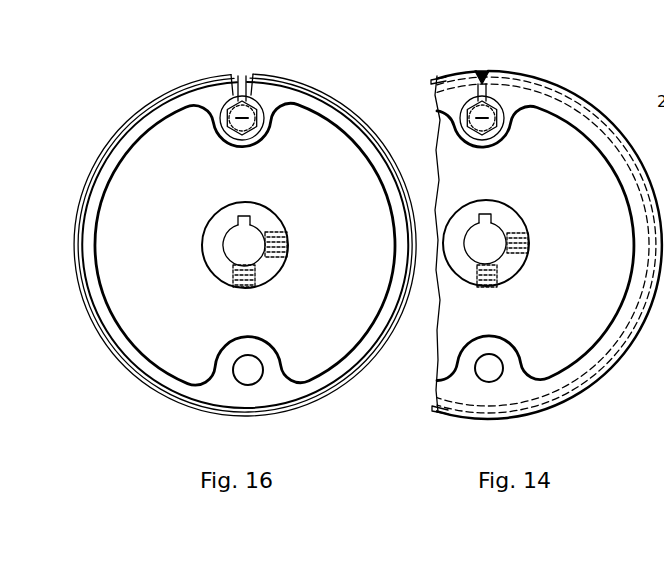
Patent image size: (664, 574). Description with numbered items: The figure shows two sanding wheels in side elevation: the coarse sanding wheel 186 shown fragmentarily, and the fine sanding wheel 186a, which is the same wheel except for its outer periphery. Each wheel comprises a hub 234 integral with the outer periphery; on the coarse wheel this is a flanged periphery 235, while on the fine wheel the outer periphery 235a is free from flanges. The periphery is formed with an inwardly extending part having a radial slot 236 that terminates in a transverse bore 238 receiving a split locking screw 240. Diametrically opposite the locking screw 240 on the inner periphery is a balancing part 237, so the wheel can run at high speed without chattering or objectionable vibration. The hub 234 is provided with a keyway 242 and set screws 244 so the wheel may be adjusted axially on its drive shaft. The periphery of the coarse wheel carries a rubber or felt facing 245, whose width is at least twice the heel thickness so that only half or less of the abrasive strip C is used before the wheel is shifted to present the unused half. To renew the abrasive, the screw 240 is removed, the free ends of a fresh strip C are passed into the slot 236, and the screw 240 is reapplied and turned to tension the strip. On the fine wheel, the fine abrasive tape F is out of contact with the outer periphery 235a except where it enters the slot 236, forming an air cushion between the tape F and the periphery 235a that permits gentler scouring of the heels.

In FIG. 14, the coarse sanding wheel 186 is at (608, 379).
In FIG. 16, the fine sanding wheel 186a is at (122, 376).
In FIG. 14, the hub 234 is at (526, 224).
In FIG. 14, the flanged periphery 235 is at (552, 85).
In FIG. 16, the outer periphery 235a is at (82, 180).
In FIG. 16, the radial slot 236 is at (248, 90).
In FIG. 14, the radial slot 236 is at (488, 86).
In FIG. 16, the balancing part 237 is at (253, 366).
In FIG. 14, the balancing part 237 is at (497, 362).
In FIG. 14, the transverse bore 238 is at (496, 130).
In FIG. 16, the split locking screw 240 is at (262, 137).
In FIG. 14, the split locking screw 240 is at (503, 128).
In FIG. 16, the keyway 242 is at (252, 226).
In FIG. 14, the keyway 242 is at (490, 226).
In FIG. 16, the set screws 244 is at (283, 260).
In FIG. 14, the set screws 244 is at (508, 268).
In FIG. 14, the rubber or felt facing 245 is at (434, 88).
In FIG. 14, the strip of abrasive paper or tape C is at (432, 80).
In FIG. 16, the fine abrasive tape F is at (134, 122).